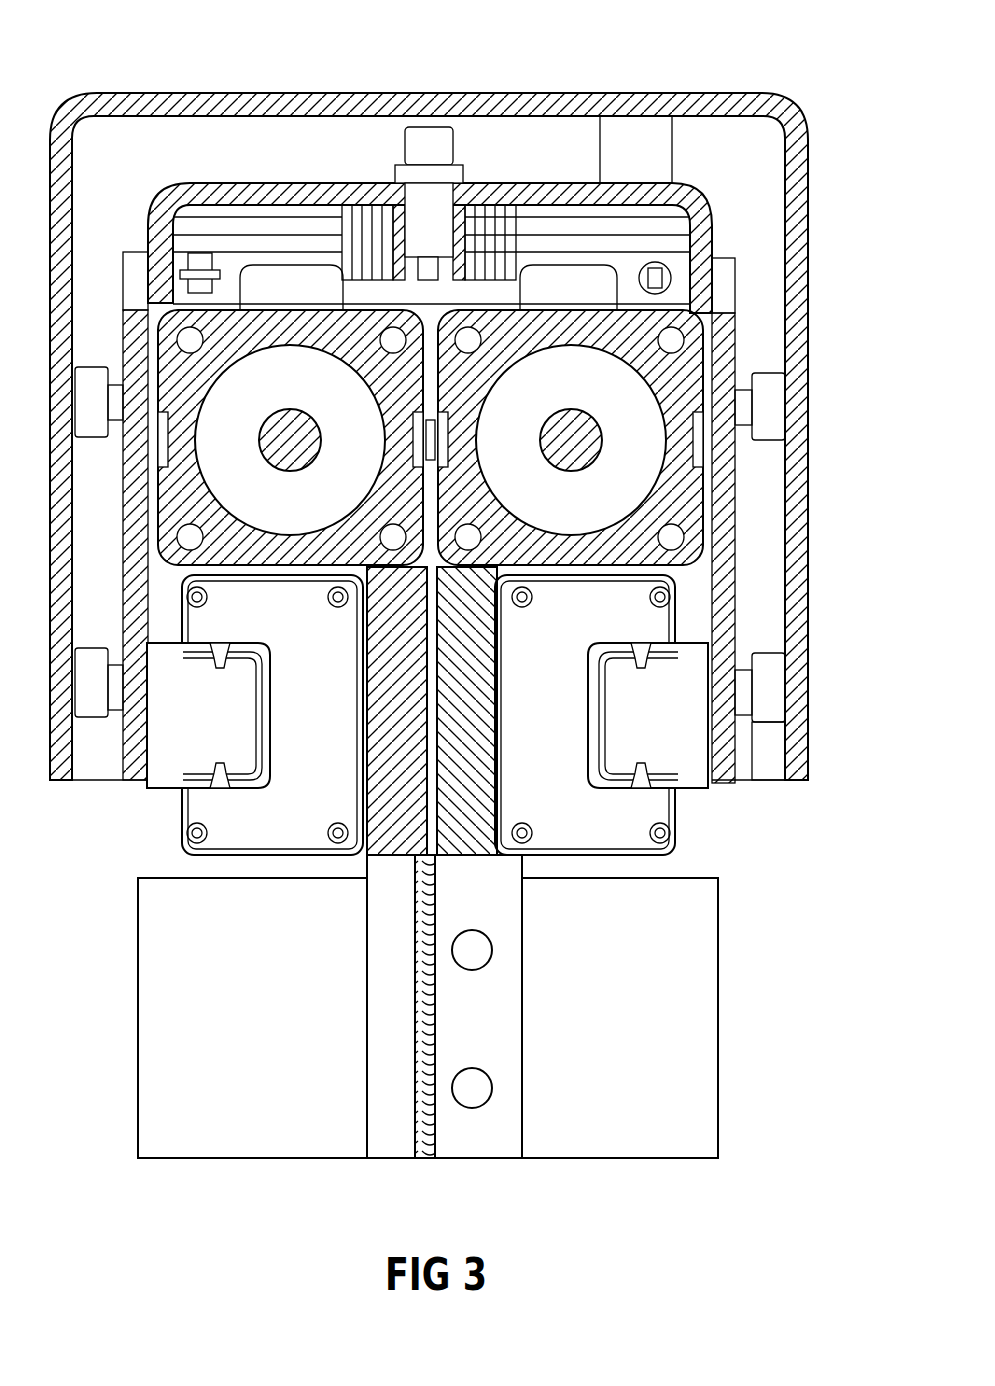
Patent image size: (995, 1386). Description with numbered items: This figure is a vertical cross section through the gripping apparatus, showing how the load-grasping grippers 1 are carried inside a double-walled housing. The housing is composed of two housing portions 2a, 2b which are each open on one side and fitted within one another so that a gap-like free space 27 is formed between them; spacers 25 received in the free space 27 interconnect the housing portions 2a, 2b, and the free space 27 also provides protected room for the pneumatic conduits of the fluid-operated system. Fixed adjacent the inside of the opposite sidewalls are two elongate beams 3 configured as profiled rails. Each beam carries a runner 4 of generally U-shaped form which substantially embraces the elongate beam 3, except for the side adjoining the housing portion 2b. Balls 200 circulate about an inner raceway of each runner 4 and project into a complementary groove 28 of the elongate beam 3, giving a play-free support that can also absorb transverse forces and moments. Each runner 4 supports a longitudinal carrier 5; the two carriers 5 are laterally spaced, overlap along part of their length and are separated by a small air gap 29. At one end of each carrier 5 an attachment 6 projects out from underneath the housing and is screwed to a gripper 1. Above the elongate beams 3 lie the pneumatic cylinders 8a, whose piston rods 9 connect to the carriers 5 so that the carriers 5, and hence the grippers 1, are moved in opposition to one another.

The gripper 1 is at (675, 1118).
The housing portion 2a is at (190, 100).
The housing portion 2b is at (330, 190).
The elongate beam 3 is at (668, 720).
The runner 4 is at (655, 805).
The longitudinal carrier 5 is at (505, 640).
The attachment 6 is at (480, 1012).
The pneumatic cylinder 8a is at (700, 358).
The piston rod 9 is at (592, 445).
The spacer 25 is at (625, 150).
The free space 27 is at (748, 490).
The groove 28 is at (640, 660).
The air gap 29 is at (432, 800).
The ball 200 is at (218, 640).